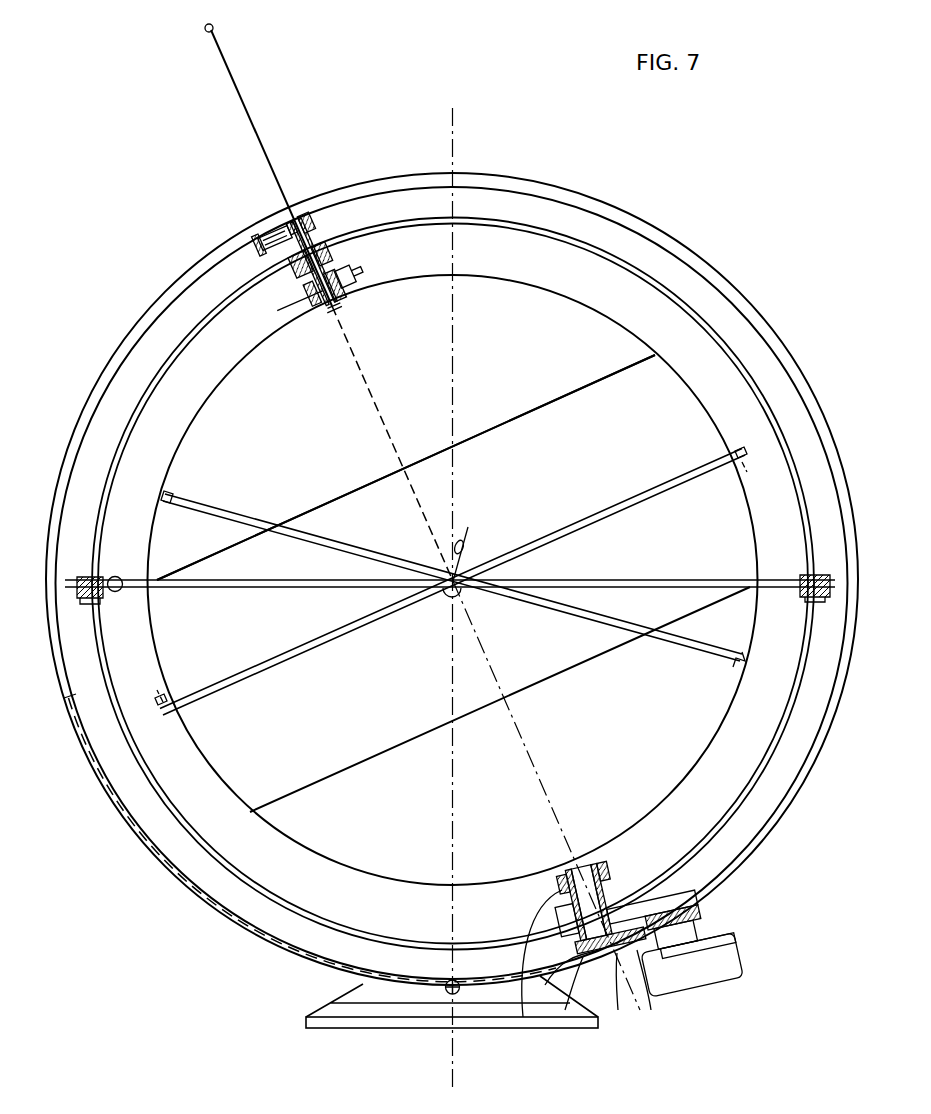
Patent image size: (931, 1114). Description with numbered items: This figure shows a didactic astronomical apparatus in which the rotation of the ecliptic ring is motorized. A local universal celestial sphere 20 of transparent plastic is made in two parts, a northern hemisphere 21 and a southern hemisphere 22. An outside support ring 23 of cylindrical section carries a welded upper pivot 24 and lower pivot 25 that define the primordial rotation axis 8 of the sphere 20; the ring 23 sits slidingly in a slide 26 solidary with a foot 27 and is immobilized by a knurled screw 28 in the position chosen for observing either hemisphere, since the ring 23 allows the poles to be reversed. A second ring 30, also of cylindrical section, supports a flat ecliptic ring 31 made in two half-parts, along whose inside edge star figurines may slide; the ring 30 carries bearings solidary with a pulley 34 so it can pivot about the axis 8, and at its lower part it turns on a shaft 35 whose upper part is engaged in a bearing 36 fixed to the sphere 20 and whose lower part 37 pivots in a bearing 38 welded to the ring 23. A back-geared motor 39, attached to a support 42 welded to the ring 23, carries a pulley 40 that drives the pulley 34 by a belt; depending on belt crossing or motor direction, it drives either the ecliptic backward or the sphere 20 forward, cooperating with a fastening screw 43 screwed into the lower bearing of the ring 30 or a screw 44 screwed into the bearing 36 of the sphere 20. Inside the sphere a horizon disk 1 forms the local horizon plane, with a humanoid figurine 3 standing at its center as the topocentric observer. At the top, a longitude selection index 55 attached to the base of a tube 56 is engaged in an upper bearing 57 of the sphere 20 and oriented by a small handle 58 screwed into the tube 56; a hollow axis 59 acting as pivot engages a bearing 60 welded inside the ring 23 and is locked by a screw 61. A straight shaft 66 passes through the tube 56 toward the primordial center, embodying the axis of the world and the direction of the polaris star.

The horizon disk 1 is at (185, 508).
The humanoid figurine 3 is at (600, 490).
The primordial rotation axis 8 is at (555, 817).
The local universal celestial sphere 20 is at (507, 277).
The northern hemisphere 21 is at (693, 388).
The southern hemisphere 22 is at (728, 485).
The outside support ring 23 is at (712, 268).
The upper pivot 24 is at (302, 228).
The lower pivot 25 is at (612, 945).
The slide 26 is at (143, 853).
The foot 27 is at (345, 1018).
The knurled screw 28 is at (445, 993).
The second ring 30 is at (112, 806).
The flat ecliptic ring 31 is at (217, 588).
The pulley 34 is at (590, 940).
The shaft 35 is at (625, 895).
The bearing 36 is at (615, 885).
The lower part of shaft 37 is at (630, 975).
The bearing 38 is at (660, 975).
The back-geared motor 39 is at (722, 985).
The pulley 40 is at (712, 925).
The support 42 is at (655, 880).
The fastening screw 43 is at (700, 905).
The screw 44 is at (572, 893).
The longitude selection index 55 is at (335, 292).
The tube 56 is at (318, 240).
The upper bearing 57 is at (345, 262).
The small handle 58 is at (288, 288).
The hollow axis 59 is at (262, 245).
The bearing 60 is at (292, 222).
The screw 61 is at (270, 228).
The straight shaft 66 is at (236, 92).